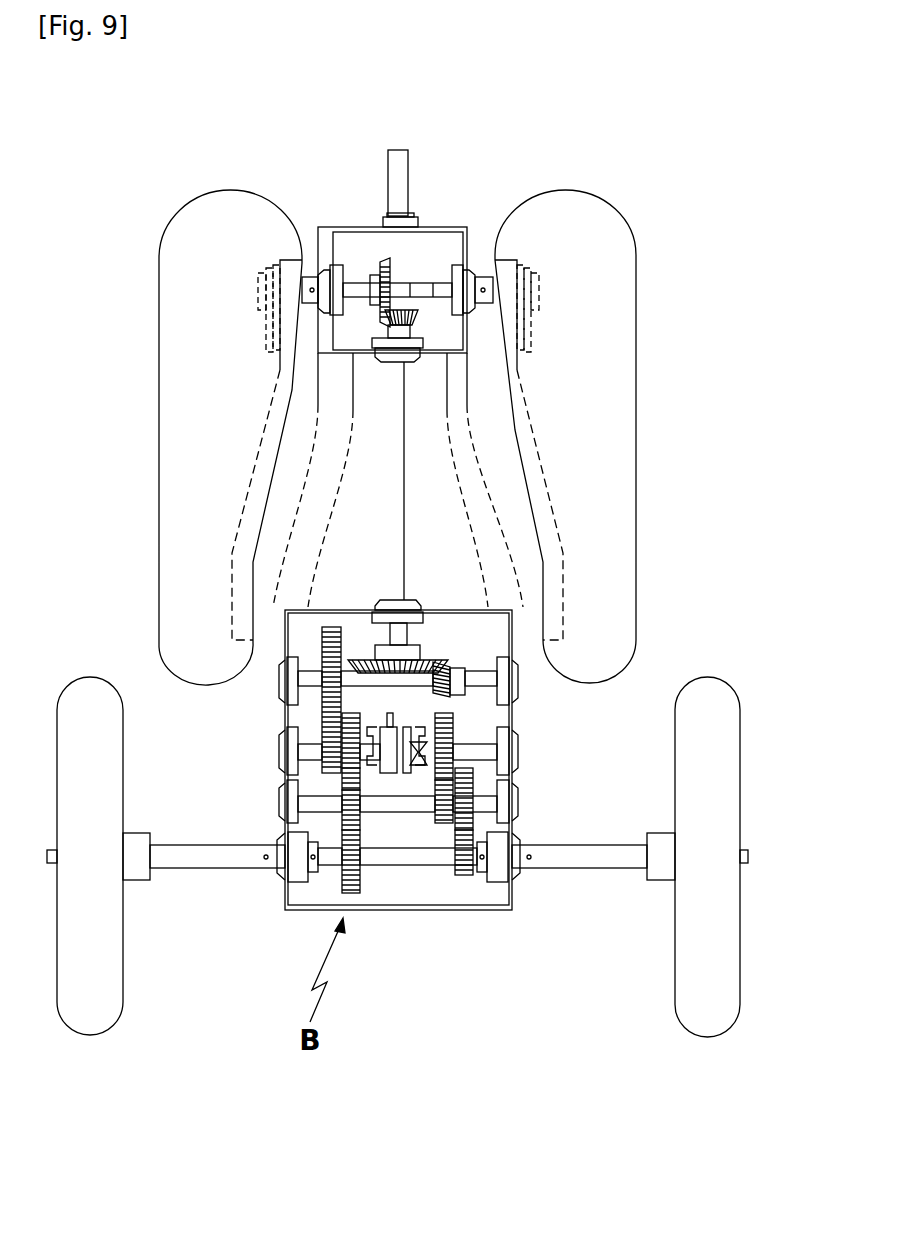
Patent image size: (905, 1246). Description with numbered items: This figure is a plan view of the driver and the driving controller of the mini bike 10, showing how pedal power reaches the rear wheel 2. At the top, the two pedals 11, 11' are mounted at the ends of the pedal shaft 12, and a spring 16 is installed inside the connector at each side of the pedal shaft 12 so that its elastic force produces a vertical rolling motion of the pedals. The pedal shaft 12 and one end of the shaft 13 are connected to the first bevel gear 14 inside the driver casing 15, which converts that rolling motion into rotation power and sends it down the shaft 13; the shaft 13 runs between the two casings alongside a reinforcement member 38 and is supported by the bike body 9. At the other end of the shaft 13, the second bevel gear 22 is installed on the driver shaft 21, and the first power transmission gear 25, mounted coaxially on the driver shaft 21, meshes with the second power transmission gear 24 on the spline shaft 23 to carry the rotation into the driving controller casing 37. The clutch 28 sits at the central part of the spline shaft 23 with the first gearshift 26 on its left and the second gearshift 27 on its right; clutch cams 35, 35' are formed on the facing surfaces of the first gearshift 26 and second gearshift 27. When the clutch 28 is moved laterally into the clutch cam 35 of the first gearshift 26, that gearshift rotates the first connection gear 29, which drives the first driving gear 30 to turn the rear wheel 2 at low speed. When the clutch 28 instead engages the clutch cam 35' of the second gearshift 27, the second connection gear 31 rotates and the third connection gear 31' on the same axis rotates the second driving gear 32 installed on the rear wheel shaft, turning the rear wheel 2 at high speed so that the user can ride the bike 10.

The rear wheel 2 is at (110, 1018).
The bike body 9 is at (407, 172).
The bike 10 is at (222, 83).
The pedal 11 is at (176, 437).
The pedal 11' is at (618, 436).
The pedal shaft 12 is at (423, 290).
The shaft 13 is at (400, 463).
The first bevel gear 14 is at (390, 305).
The driver casing 15 is at (377, 224).
The spring 16 is at (538, 252).
The driver shaft 21 is at (478, 677).
The second bevel gear 22 is at (433, 660).
The spline shaft 23 is at (478, 742).
The second power transmission gear 24 is at (342, 735).
The first power transmission gear 25 is at (322, 633).
The first gearshift 26 is at (342, 778).
The second gearshift 27 is at (457, 775).
The clutch 28 is at (392, 755).
The first connection gear 29 is at (342, 818).
The first driving gear 30 is at (342, 882).
The second connection gear 31 is at (529, 804).
The third connection gear 31' is at (526, 778).
The second driving gear 32 is at (465, 878).
The clutch cam 35 is at (235, 651).
The clutch cam 35' is at (416, 853).
The driving controller casing 37 is at (452, 910).
The reinforcement member 38 is at (497, 515).